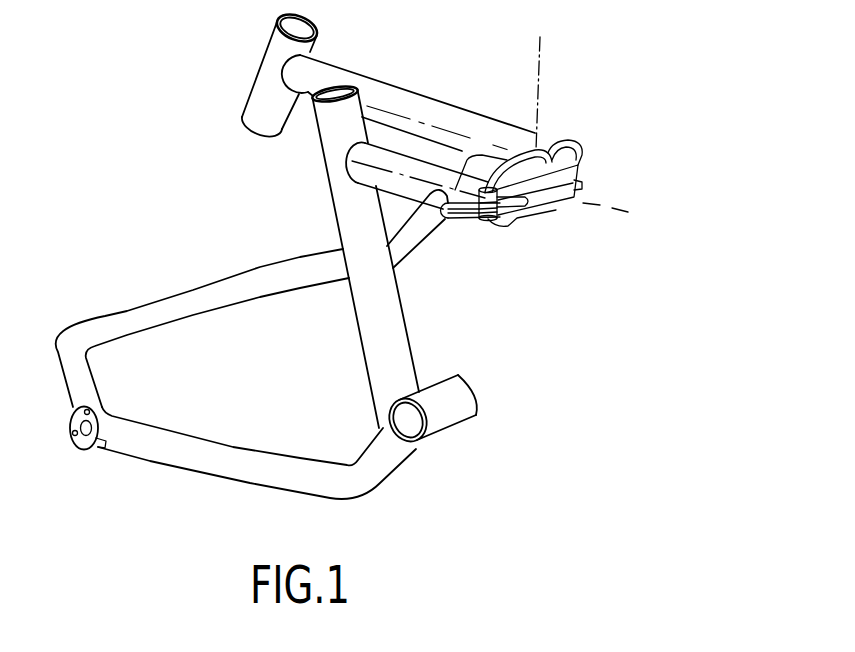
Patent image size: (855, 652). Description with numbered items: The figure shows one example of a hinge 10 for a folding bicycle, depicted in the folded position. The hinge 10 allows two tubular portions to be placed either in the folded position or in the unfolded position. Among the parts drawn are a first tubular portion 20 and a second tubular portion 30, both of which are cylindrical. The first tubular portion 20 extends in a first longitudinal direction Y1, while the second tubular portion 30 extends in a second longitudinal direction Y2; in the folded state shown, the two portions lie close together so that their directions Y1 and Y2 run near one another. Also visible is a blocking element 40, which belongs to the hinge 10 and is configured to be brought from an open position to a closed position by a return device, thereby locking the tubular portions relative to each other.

The hinge 10 is at (616, 127).
The first tubular portion 20 is at (381, 188).
The second tubular portion 30 is at (415, 82).
The blocking element 40 is at (548, 224).
The first longitudinal direction Y1 is at (343, 163).
The second longitudinal direction Y2 is at (281, 63).